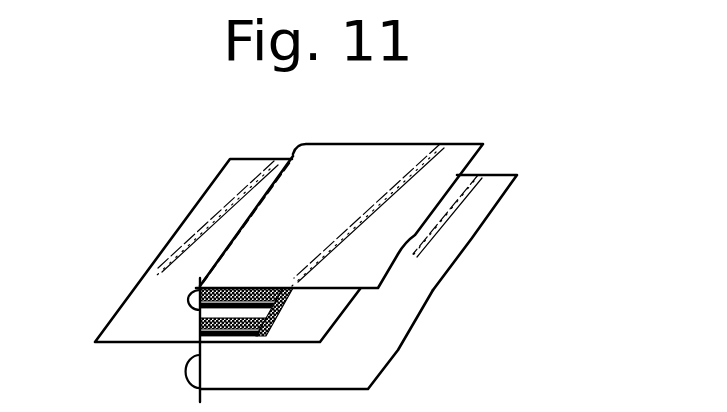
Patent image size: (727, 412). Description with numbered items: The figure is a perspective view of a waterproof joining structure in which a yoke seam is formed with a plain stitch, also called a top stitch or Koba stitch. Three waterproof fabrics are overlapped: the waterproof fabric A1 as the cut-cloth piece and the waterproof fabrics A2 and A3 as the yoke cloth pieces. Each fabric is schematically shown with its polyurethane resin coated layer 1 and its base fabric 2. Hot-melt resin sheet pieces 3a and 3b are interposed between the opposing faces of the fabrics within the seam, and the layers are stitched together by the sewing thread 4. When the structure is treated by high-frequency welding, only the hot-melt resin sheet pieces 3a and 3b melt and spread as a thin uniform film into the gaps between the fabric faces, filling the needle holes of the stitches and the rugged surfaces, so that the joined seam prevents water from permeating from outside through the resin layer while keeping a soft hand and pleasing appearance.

The polyurethane resin coated layer 1 is at (243, 167).
The base fabric 2 is at (240, 350).
The hot-melt resin sheet piece 3a is at (195, 293).
The hot-melt resin sheet piece 3b is at (193, 313).
The sewing thread 4 is at (296, 165).
The waterproof fabric A1 is at (213, 182).
The waterproof fabric A2 is at (450, 139).
The waterproof fabric A3 is at (494, 220).